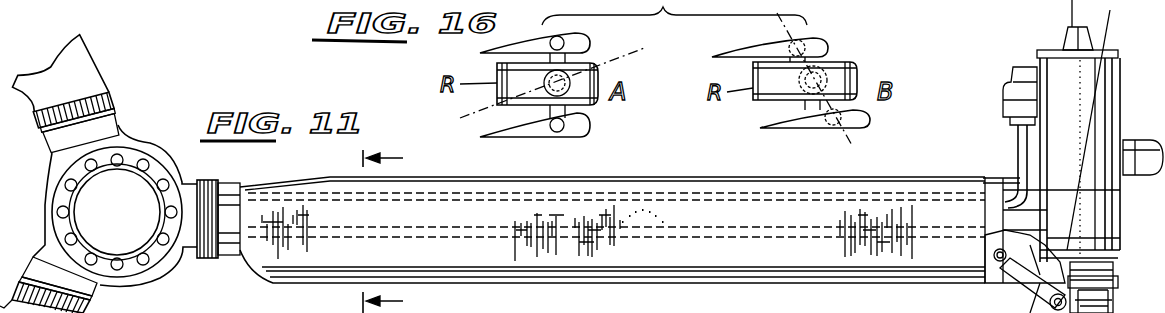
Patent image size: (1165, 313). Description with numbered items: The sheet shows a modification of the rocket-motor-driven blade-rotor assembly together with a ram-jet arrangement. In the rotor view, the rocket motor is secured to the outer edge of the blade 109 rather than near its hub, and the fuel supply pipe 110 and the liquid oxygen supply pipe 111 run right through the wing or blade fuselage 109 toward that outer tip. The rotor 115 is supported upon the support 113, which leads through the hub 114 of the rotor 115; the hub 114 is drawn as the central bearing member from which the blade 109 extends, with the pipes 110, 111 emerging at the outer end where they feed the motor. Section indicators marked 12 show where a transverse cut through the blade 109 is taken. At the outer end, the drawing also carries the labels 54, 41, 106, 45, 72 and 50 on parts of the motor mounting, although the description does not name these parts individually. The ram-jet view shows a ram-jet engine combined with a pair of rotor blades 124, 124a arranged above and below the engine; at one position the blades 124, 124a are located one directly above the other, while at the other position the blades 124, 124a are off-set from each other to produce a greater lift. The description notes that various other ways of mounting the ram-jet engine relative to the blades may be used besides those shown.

In FIG. 11, the rotor 115 is at (143, 158).
In FIG. 11, the hub 114 is at (213, 255).
In FIG. 11, the blade 109 is at (642, 177).
In FIG. 11, the section line 12 is at (398, 230).
In FIG. 11, the support 113 is at (1003, 180).
In FIG. 11, the cap 54 is at (1053, 32).
In FIG. 11, the housing 41 is at (1117, 100).
In FIG. 11, the fuel supply pipe 110 is at (1017, 137).
In FIG. 11, the cylinder 106 is at (1143, 140).
In FIG. 11, the liquid oxygen supply pipe 111 is at (993, 257).
In FIG. 11, the spindle 45 is at (1118, 268).
In FIG. 11, the flange 72 is at (1120, 284).
In FIG. 11, the lower member 50 is at (1112, 305).
In FIG. 16, the blade 124 is at (500, 43).
In FIG. 16, the lower blade 124a is at (533, 135).